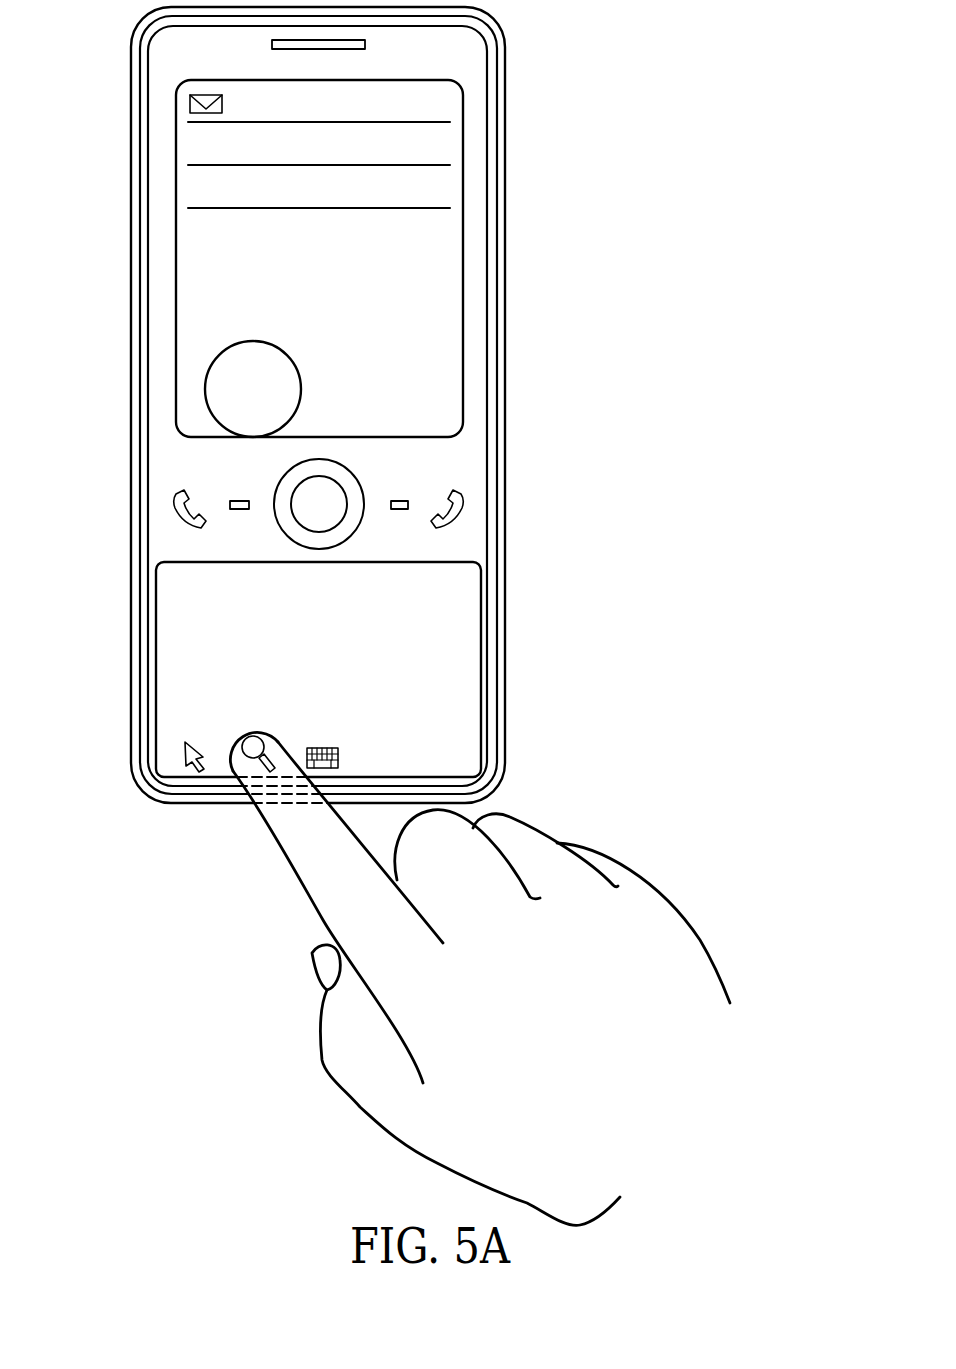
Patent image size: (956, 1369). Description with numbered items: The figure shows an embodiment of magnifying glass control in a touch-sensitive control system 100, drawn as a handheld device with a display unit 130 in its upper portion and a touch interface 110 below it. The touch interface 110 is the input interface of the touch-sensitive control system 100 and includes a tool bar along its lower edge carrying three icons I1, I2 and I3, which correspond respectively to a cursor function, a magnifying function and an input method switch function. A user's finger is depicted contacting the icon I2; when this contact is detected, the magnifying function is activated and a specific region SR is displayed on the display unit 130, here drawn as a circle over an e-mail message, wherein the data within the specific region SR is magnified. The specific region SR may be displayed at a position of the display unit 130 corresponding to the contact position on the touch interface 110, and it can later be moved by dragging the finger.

The touch-sensitive control system 100 is at (498, 52).
The display unit 130 is at (463, 223).
The touch interface 110 is at (482, 598).
The specific region SR is at (207, 368).
The icon (cursor function) I1 is at (192, 768).
The icon (magnifying function) I2 is at (250, 785).
The icon (input method switch function) I3 is at (323, 770).